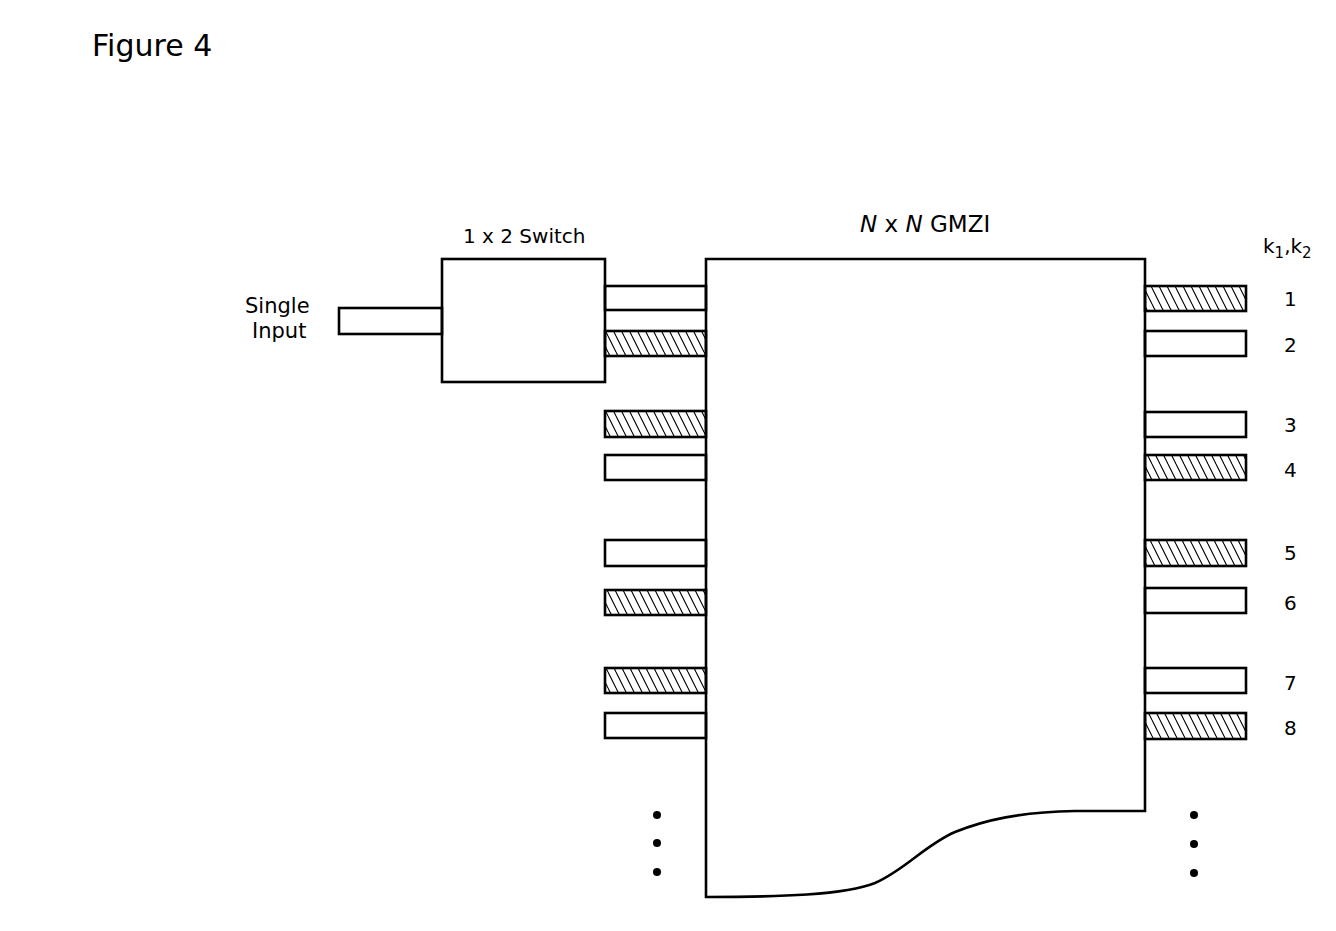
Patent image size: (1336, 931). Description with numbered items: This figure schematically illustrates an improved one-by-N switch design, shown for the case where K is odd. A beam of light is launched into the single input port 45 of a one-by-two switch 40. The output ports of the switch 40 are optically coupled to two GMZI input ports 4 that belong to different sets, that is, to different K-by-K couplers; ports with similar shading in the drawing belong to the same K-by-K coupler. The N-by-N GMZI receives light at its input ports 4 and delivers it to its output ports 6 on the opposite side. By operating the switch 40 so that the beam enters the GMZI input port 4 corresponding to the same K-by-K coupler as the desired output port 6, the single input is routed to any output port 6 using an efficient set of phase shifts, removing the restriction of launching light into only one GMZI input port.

The input ports 4 is at (652, 286).
The output ports 6 is at (1206, 286).
The 1×2 switch 40 is at (475, 382).
The single input port 45 is at (385, 308).